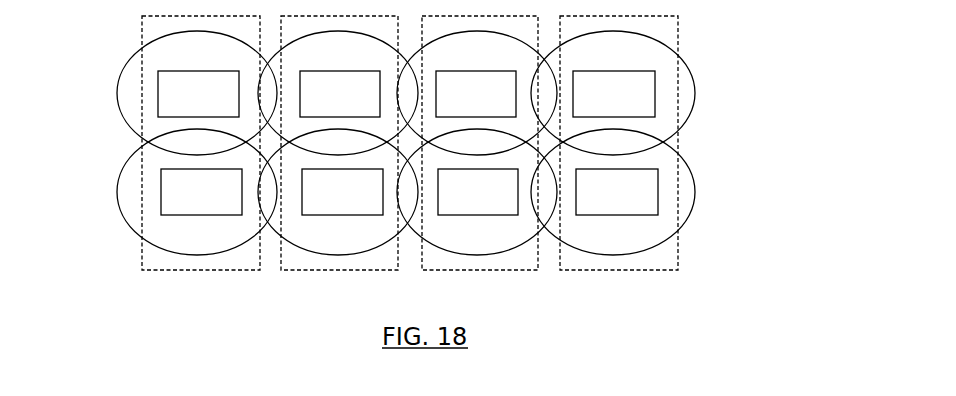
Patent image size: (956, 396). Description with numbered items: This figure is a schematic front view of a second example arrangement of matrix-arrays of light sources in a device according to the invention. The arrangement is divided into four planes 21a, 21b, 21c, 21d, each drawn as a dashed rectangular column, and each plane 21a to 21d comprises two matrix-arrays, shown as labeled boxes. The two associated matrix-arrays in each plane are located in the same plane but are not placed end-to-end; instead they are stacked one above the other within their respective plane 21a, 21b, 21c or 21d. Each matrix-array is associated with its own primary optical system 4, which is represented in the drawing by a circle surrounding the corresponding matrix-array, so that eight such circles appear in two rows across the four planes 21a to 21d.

The primary optical system 4 is at (694, 103).
The plane 21a is at (140, 252).
The plane 21b is at (322, 270).
The plane 21c is at (482, 272).
The plane 21d is at (677, 271).